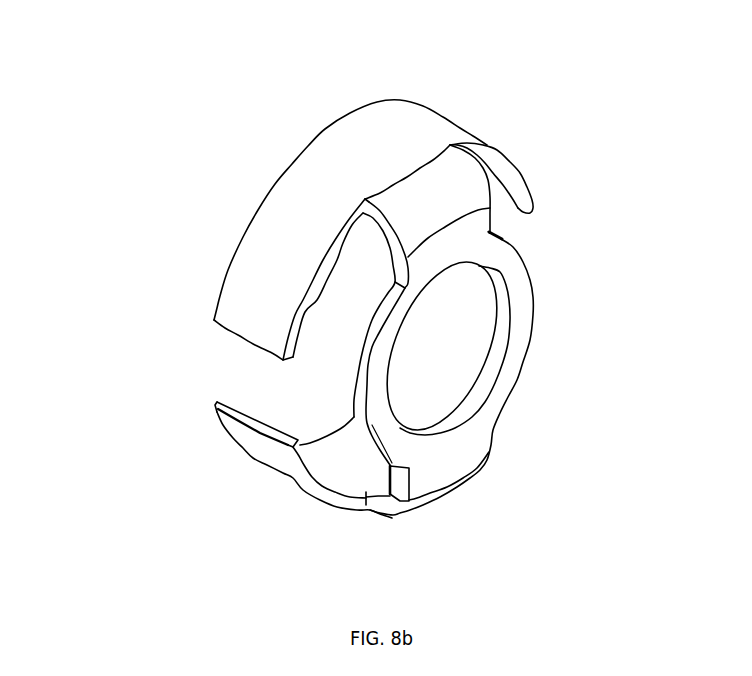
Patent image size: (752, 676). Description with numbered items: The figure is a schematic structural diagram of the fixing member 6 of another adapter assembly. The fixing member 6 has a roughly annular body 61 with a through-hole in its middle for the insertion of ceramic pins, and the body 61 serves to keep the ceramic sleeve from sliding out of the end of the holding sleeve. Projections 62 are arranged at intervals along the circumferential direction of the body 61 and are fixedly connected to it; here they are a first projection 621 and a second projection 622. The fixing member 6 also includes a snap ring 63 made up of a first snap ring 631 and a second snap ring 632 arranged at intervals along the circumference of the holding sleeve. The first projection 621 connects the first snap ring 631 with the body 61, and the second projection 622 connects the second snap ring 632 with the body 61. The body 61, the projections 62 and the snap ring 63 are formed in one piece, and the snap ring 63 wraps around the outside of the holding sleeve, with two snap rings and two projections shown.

The fixing member 6 is at (408, 52).
The body 61 is at (385, 436).
The projections 62 is at (635, 309).
The first projection 621 is at (455, 198).
The second projection 622 is at (440, 487).
The snap ring 63 is at (108, 359).
The first snap ring 631 is at (280, 273).
The second snap ring 632 is at (270, 456).